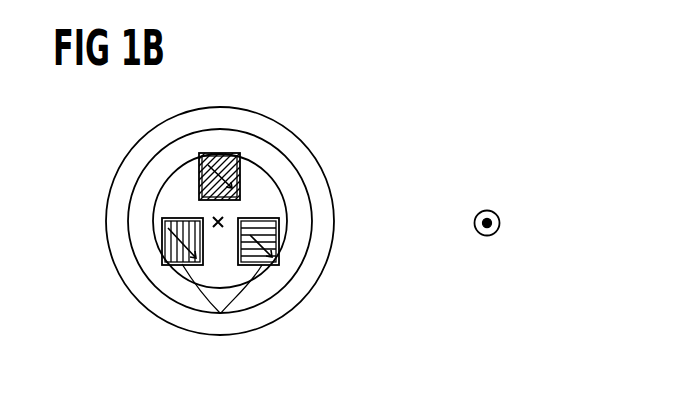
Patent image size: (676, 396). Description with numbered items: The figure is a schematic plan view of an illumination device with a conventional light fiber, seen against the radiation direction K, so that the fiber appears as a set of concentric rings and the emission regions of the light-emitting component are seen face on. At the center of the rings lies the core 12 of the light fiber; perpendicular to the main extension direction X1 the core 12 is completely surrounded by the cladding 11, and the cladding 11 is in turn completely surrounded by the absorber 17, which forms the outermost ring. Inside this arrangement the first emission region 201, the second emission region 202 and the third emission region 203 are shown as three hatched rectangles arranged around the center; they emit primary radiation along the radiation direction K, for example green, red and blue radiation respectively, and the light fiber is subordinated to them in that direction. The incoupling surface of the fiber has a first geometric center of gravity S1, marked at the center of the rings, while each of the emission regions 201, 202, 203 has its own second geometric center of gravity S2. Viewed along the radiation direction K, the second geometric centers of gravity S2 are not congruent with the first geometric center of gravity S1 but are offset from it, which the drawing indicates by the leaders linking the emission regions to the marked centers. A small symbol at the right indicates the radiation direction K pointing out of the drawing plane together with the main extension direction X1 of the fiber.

The cladding 11 is at (305, 229).
The core 12 is at (163, 195).
The absorber 17 is at (313, 259).
The first emission region 201 is at (162, 264).
The second emission region 202 is at (240, 158).
The third emission region 203 is at (279, 265).
The first geometric center of gravity S1 is at (219, 221).
The second geometric center of gravity S2 is at (228, 152).
The radiation direction K is at (534, 222).
The main extension direction X1 is at (500, 222).